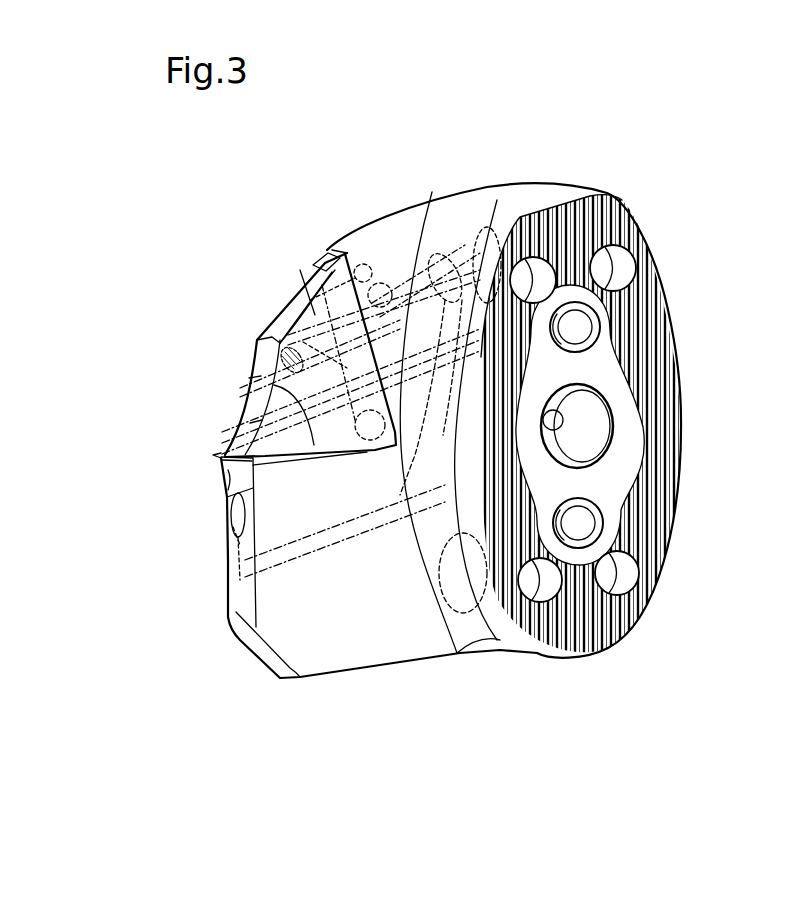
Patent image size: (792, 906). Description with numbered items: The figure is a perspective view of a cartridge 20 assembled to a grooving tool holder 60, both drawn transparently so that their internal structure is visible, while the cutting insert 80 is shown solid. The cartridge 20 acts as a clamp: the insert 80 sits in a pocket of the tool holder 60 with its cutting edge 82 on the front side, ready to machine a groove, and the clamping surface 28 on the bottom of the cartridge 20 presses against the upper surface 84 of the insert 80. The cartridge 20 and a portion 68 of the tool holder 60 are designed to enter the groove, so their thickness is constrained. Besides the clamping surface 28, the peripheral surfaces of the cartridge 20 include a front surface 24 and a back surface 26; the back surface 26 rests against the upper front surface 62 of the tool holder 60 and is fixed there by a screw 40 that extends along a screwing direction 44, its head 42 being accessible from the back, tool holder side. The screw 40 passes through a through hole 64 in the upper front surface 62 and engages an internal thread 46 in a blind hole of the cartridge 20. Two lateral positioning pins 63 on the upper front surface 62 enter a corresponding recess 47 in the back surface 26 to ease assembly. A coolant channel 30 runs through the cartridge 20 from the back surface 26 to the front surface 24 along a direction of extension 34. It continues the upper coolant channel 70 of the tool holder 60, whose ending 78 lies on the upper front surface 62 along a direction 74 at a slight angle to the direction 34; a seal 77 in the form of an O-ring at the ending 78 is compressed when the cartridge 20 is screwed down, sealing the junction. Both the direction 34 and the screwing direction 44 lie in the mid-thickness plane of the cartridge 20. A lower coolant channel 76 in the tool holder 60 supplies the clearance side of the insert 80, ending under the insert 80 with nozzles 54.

The cartridge 20 is at (212, 279).
The front surface 24 is at (258, 405).
The back surface 26 is at (332, 250).
The clamping surface 28 is at (258, 462).
The coolant channel 30 is at (265, 380).
The direction of extension 34 is at (320, 452).
The screw 40 is at (398, 283).
The head 42 is at (437, 270).
The screwing direction 44 is at (458, 267).
The internal thread 46 is at (288, 342).
The recess 47 is at (310, 300).
The nozzles 54 is at (232, 528).
The grooving tool holder 60 is at (487, 192).
The upper front surface 62 is at (314, 258).
The lateral positioning pins 63 is at (300, 270).
The through hole 64 is at (380, 283).
The portion 68 is at (213, 168).
The upper coolant channel 70 is at (422, 458).
The direction of extension 74 is at (400, 495).
The lower coolant channel 76 is at (312, 553).
The seal 77 is at (347, 395).
The ending 78 is at (360, 440).
The cutting insert 80 is at (225, 473).
The cutting edge 82 is at (218, 460).
The upper surface 84 is at (220, 455).